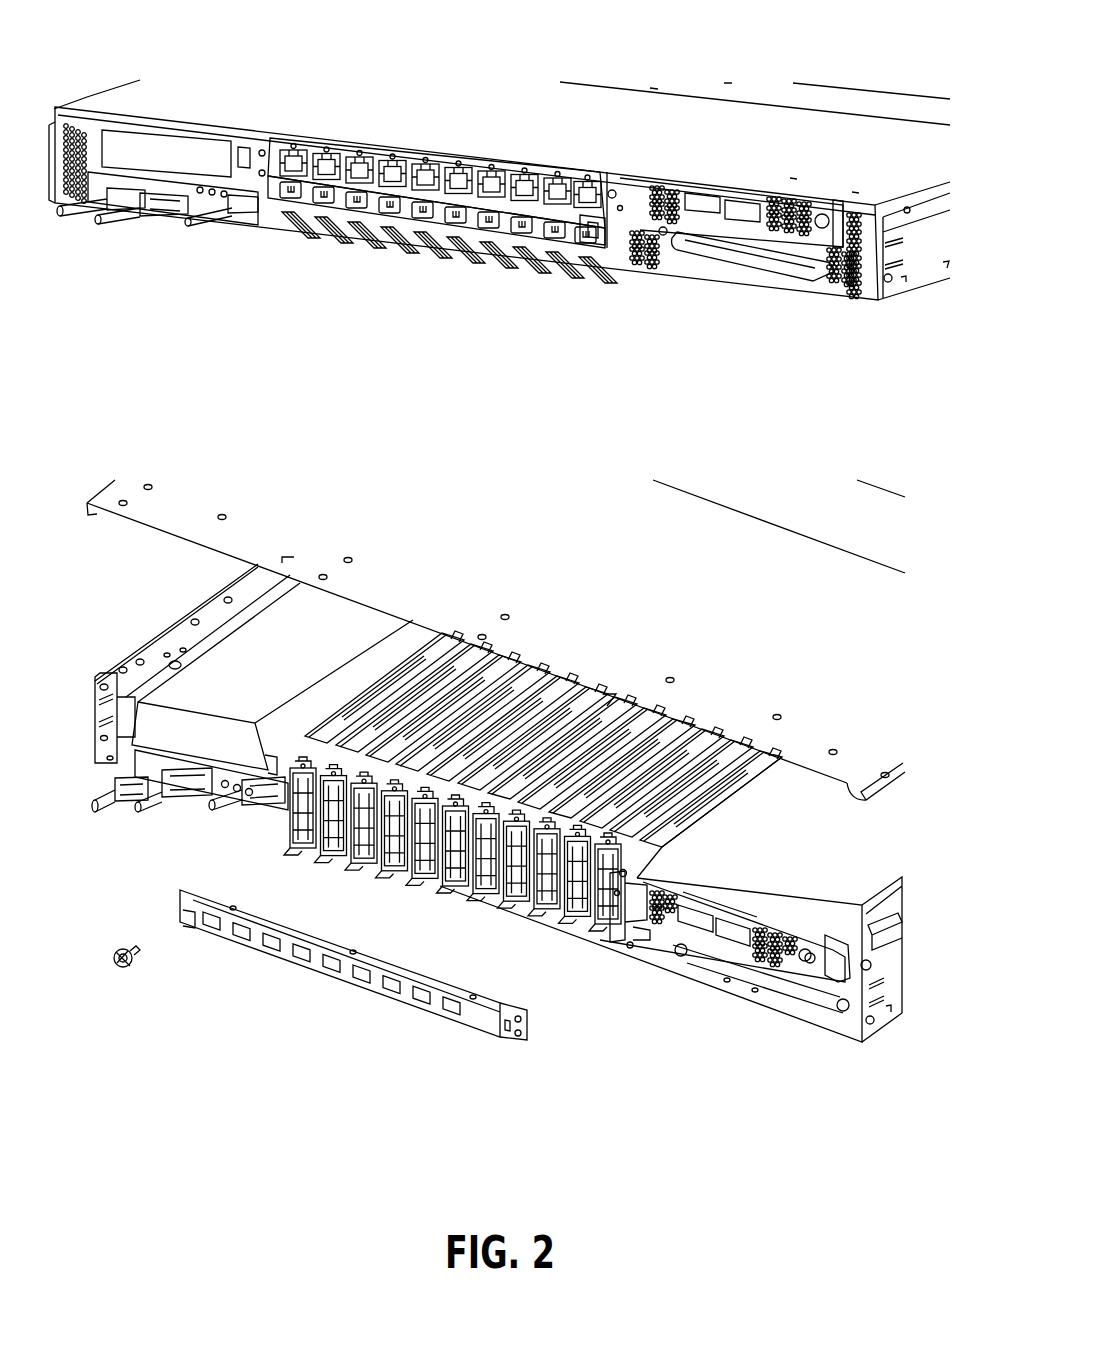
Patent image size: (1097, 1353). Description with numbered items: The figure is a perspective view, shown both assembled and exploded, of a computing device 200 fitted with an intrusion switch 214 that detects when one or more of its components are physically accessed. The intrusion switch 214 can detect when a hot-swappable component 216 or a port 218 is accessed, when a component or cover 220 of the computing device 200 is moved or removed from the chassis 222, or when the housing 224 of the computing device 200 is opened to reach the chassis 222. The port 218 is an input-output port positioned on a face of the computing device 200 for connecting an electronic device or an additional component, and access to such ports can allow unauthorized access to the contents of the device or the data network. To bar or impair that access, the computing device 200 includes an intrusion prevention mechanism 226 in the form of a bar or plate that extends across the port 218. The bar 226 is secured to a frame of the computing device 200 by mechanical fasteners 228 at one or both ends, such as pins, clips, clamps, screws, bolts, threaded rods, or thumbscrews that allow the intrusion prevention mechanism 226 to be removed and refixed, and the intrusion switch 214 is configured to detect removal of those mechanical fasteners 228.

The computing device 200 is at (499, 561).
The intrusion switch 214 is at (273, 812).
The hot-swappable component 216 is at (591, 264).
The port 218 is at (405, 158).
The cover 220 is at (697, 798).
The chassis 222 is at (652, 945).
The housing 224 is at (548, 103).
The intrusion prevention mechanism 226 is at (312, 197).
The mechanical fasteners 228 is at (106, 961).